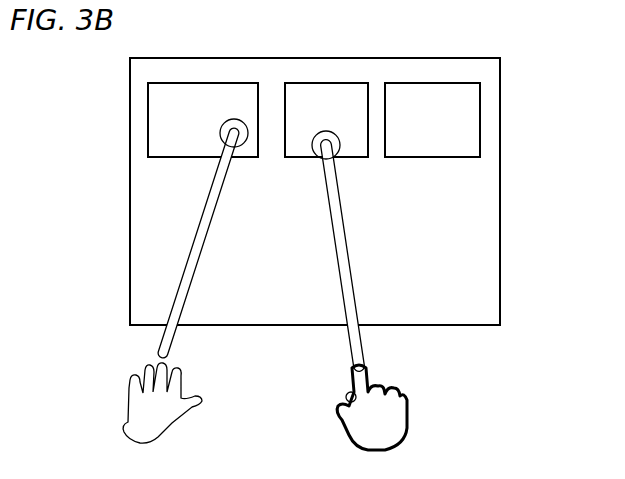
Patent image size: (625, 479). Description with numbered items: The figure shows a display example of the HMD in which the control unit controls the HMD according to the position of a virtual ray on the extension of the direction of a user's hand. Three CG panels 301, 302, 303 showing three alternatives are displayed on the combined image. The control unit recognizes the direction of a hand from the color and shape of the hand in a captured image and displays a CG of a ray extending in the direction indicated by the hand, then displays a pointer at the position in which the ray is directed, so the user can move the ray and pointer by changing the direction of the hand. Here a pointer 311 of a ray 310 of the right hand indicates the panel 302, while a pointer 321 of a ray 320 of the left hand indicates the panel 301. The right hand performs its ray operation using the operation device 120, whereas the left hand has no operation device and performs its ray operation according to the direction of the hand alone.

The operation device 120 is at (347, 392).
The panel 301 is at (188, 83).
The panel 302 is at (310, 83).
The panel 303 is at (415, 83).
The ray 310 is at (347, 268).
The pointer 311 is at (340, 141).
The ray 320 is at (192, 247).
The pointer 321 is at (221, 136).